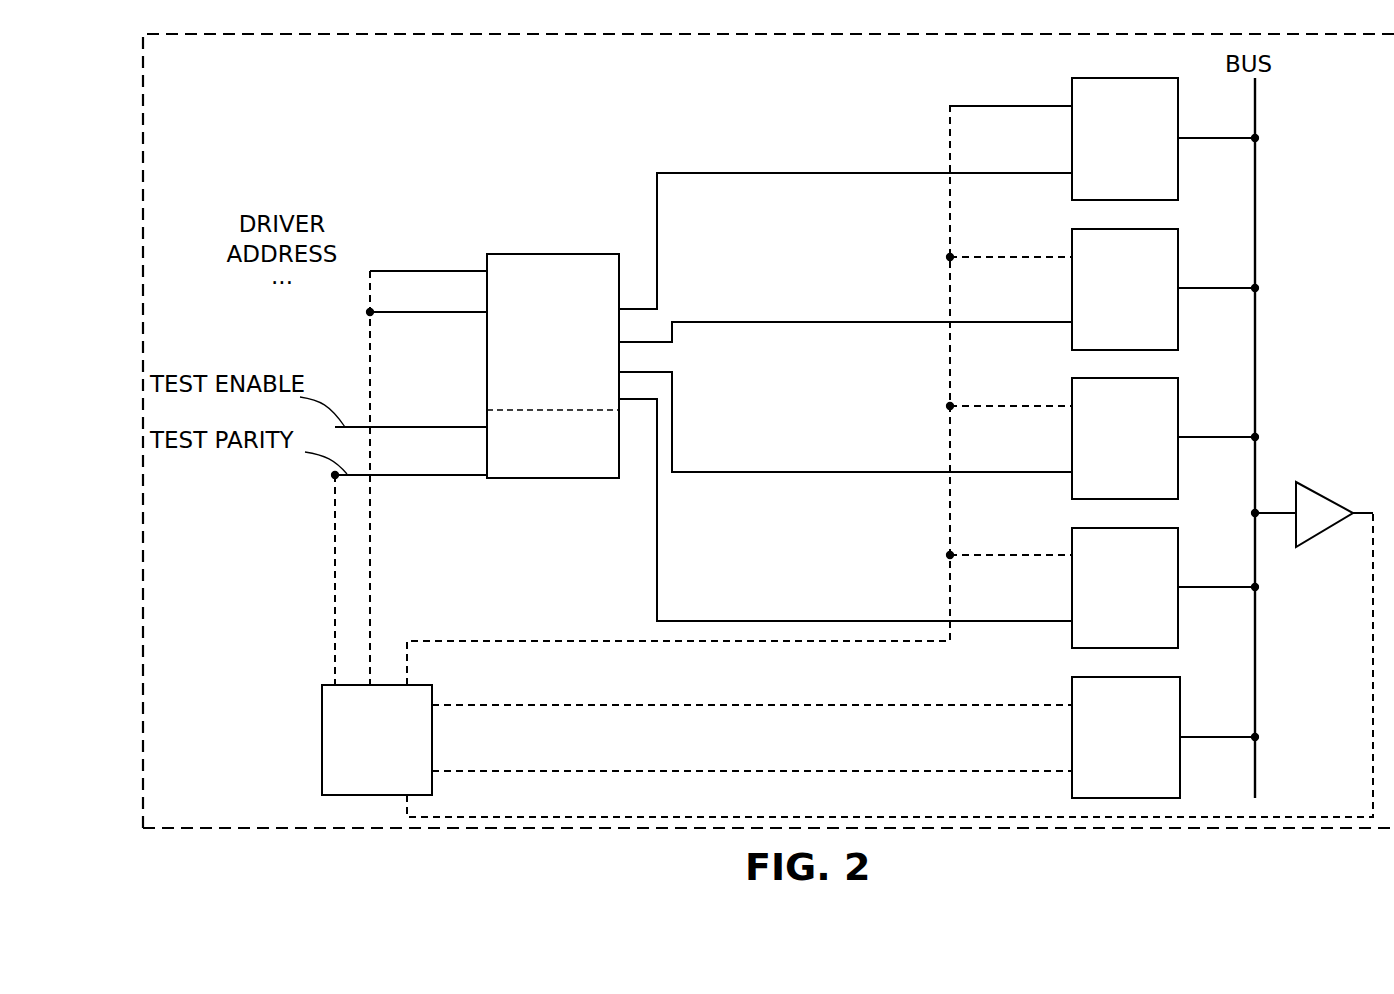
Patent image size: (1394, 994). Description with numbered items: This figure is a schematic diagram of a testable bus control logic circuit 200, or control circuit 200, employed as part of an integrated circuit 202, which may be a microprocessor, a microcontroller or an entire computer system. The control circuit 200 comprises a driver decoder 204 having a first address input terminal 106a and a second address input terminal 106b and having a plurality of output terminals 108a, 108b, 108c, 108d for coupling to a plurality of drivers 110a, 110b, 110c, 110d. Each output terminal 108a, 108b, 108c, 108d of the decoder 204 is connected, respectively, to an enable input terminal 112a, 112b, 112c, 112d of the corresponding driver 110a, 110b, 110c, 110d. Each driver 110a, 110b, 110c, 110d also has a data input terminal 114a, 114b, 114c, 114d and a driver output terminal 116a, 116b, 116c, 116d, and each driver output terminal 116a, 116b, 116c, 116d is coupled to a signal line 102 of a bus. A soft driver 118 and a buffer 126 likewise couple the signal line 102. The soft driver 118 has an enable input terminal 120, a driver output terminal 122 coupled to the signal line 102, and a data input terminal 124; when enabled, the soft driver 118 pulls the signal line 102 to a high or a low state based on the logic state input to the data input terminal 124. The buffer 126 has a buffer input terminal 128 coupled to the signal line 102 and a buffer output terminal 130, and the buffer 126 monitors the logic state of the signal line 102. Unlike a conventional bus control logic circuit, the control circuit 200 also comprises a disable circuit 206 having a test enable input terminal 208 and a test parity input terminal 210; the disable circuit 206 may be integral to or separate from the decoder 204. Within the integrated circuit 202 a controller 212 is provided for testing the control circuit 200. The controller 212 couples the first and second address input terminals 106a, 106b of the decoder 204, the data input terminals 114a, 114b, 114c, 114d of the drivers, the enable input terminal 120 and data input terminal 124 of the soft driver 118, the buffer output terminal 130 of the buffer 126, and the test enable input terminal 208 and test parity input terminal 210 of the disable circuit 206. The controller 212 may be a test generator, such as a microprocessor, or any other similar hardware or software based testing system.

The testable bus control logic circuit 200 is at (412, 190).
The integrated circuit 202 is at (410, 829).
The driver decoder 204 is at (530, 254).
The disable circuit 206 is at (537, 479).
The test enable input terminal 208 is at (487, 425).
The test parity input terminal 210 is at (487, 472).
The controller 212 is at (322, 767).
The first address input terminal 106a is at (487, 268).
The second address input terminal 106b is at (487, 310).
The output terminal 108a is at (641, 305).
The output terminal 108b is at (645, 341).
The output terminal 108c is at (641, 366).
The output terminal 108d is at (641, 405).
The driver 110a is at (1110, 78).
The driver 110b is at (1142, 229).
The driver 110c is at (1142, 378).
The driver 110d is at (1142, 528).
The enable input terminal 112a is at (1065, 172).
The enable input terminal 112b is at (1065, 322).
The enable input terminal 112c is at (1065, 471).
The enable input terminal 112d is at (1065, 620).
The data input terminal 114a is at (1062, 106).
The data input terminal 114b is at (1062, 256).
The data input terminal 114c is at (1063, 405).
The data input terminal 114d is at (1063, 554).
The driver output terminal 116a is at (1200, 137).
The driver output terminal 116b is at (1218, 264).
The driver output terminal 116c is at (1218, 414).
The driver output terminal 116d is at (1218, 564).
The soft driver 118 is at (1145, 677).
The enable input terminal 120 is at (1066, 770).
The driver output terminal 122 is at (1218, 714).
The data input terminal 124 is at (1066, 704).
The buffer 126 is at (1323, 492).
The buffer input terminal 128 is at (1290, 511).
The buffer output terminal 130 is at (1365, 512).
The signal line 102 is at (1255, 115).